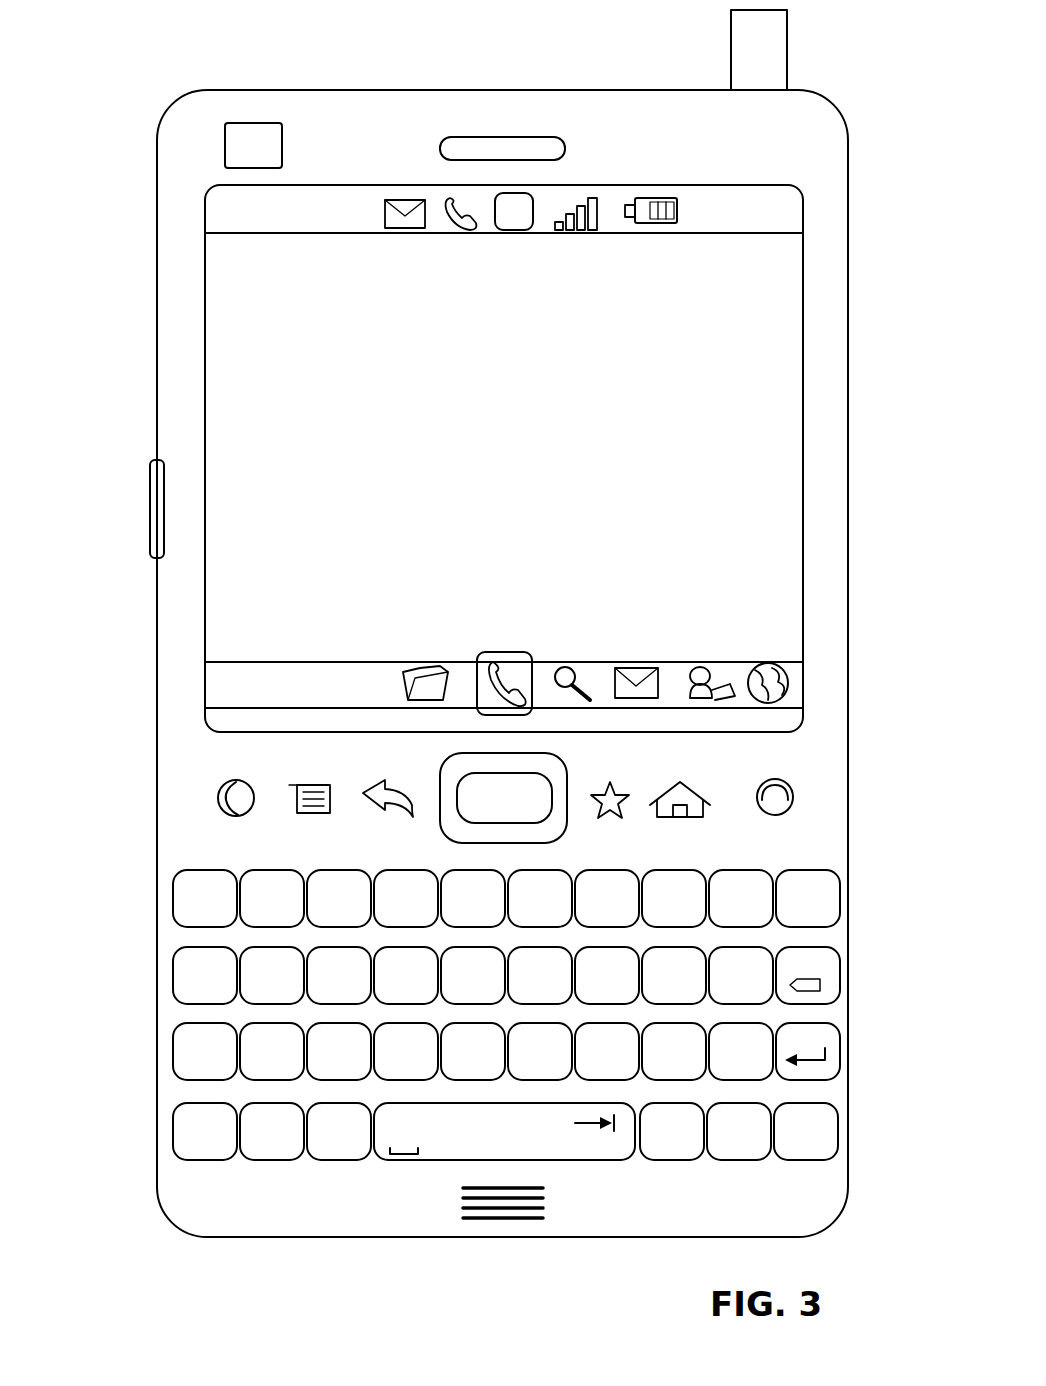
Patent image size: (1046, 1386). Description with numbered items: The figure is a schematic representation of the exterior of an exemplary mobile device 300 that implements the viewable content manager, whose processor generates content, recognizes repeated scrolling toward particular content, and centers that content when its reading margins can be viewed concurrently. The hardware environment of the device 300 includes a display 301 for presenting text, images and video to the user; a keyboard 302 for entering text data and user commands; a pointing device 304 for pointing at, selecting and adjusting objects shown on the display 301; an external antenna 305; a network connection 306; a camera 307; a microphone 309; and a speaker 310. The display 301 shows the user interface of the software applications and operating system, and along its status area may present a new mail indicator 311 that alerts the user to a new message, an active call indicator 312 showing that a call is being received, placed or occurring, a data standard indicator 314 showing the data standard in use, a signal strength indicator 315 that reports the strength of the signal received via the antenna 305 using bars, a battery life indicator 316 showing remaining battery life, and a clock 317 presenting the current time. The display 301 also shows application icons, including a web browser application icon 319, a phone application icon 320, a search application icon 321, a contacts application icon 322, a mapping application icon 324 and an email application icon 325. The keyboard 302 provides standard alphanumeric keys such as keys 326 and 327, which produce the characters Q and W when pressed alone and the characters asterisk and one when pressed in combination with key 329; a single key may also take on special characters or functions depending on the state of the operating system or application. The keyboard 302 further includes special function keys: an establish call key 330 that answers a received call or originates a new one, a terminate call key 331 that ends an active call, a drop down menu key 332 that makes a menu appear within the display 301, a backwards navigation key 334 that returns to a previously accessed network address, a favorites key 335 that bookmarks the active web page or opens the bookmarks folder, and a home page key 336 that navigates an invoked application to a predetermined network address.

The mobile device 300 is at (125, 203).
The display 301 is at (232, 380).
The keyboard 302 is at (448, 1009).
The pointing device 304 is at (440, 800).
The antenna 305 is at (731, 48).
The network connection 306 is at (150, 500).
The camera 307 is at (225, 147).
The microphone 309 is at (462, 1203).
The speaker 310 is at (440, 147).
The new mail indicator 311 is at (385, 214).
The active call indicator 312 is at (447, 208).
The data standard indicator 314 is at (533, 200).
The signal strength indicator 315 is at (597, 205).
The battery life indicator 316 is at (652, 200).
The clock 317 is at (730, 200).
The web browser application icon 319 is at (405, 686).
The phone application icon 320 is at (478, 656).
The search application icon 321 is at (556, 670).
The contacts application icon 322 is at (690, 676).
The mapping application icon 324 is at (760, 666).
The email application icon 325 is at (622, 668).
The key 326 is at (175, 905).
The key 327 is at (255, 868).
The key 329 is at (212, 1160).
The establish call key 330 is at (218, 800).
The terminate call key 331 is at (757, 800).
The drop down menu key 332 is at (297, 798).
The backwards navigation key 334 is at (365, 800).
The favorites key 335 is at (605, 791).
The home page key 336 is at (668, 805).